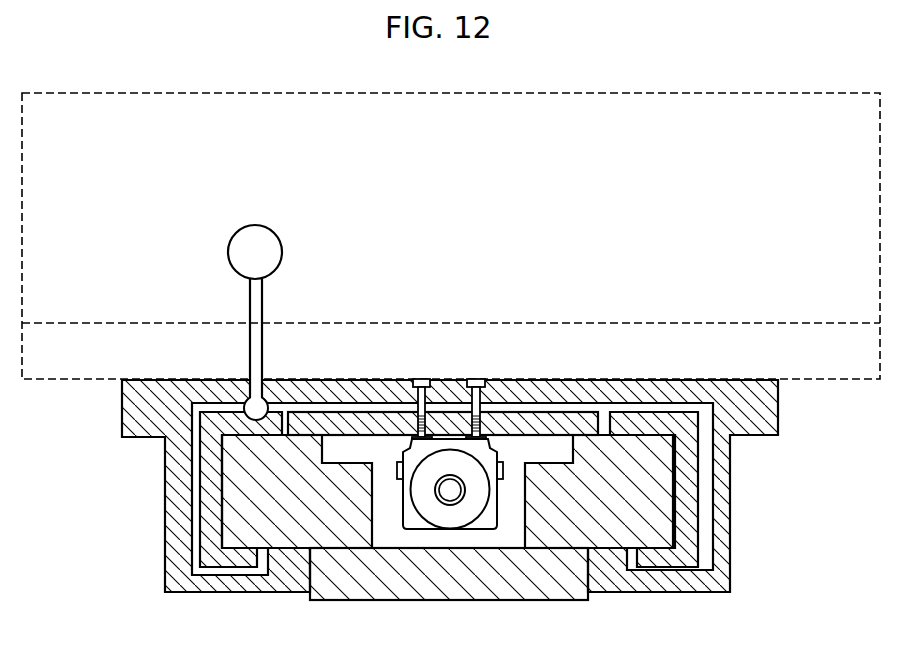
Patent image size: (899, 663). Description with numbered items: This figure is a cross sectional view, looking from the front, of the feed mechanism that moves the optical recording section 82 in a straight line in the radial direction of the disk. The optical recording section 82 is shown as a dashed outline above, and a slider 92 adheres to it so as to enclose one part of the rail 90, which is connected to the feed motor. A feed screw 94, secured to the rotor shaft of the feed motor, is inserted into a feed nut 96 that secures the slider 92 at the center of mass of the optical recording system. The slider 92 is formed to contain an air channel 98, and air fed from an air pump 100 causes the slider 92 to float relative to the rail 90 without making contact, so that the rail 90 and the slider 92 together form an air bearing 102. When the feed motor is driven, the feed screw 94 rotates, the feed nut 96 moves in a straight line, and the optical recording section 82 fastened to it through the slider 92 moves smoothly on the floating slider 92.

The optical recording section 82 is at (468, 193).
The rail 90 is at (668, 452).
The slider 92 is at (478, 505).
The feed screw 94 is at (438, 495).
The feed nut 96 is at (450, 527).
The air channel 98 is at (707, 519).
The air pump 100 is at (270, 233).
The air bearing 102 is at (740, 552).